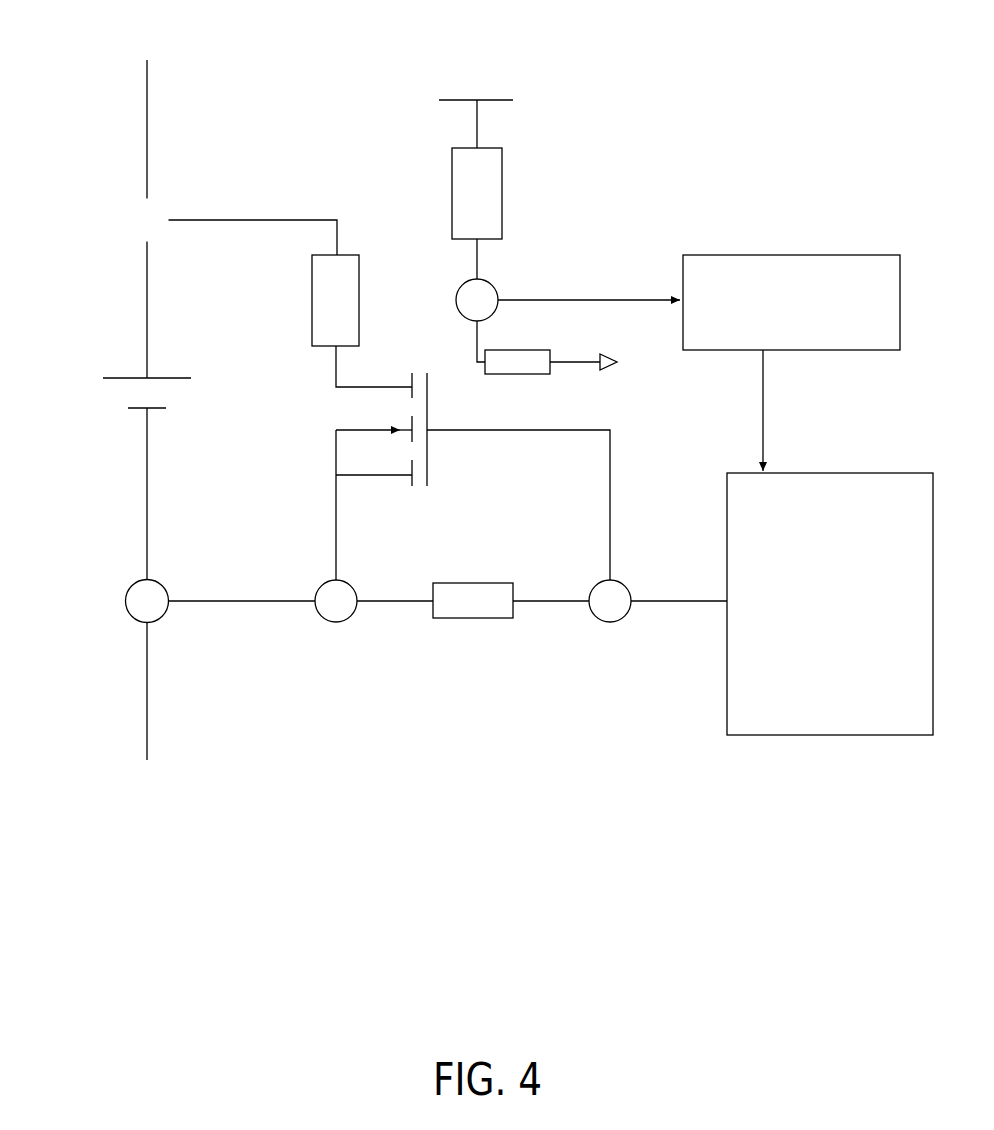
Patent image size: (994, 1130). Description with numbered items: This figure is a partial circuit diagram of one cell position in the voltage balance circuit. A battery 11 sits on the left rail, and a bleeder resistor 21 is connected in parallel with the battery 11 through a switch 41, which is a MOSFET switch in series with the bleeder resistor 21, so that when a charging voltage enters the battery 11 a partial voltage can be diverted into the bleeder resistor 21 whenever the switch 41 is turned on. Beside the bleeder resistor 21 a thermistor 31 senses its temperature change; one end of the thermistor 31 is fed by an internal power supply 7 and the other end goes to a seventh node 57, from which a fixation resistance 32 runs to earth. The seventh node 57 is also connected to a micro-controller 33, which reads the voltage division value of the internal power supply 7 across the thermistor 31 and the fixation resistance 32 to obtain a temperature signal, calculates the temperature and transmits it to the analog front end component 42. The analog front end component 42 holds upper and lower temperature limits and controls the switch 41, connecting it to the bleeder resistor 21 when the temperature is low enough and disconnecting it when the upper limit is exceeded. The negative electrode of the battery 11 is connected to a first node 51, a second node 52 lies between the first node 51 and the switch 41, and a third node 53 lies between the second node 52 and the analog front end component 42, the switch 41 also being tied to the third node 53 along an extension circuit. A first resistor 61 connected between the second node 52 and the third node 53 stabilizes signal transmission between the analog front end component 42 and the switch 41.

The internal power supply 7 is at (499, 100).
The battery 11 is at (128, 378).
The bleeder resistor 21 is at (312, 298).
The thermistor 31 is at (452, 194).
The fixation resistance 32 is at (513, 375).
The micro-controller 33 is at (785, 255).
The switch 41 is at (428, 457).
The analog front end component 42 is at (836, 736).
The first node 51 is at (125, 601).
The second node 52 is at (328, 621).
The third node 53 is at (610, 622).
The seventh node 57 is at (455, 300).
The first resistor 61 is at (476, 619).